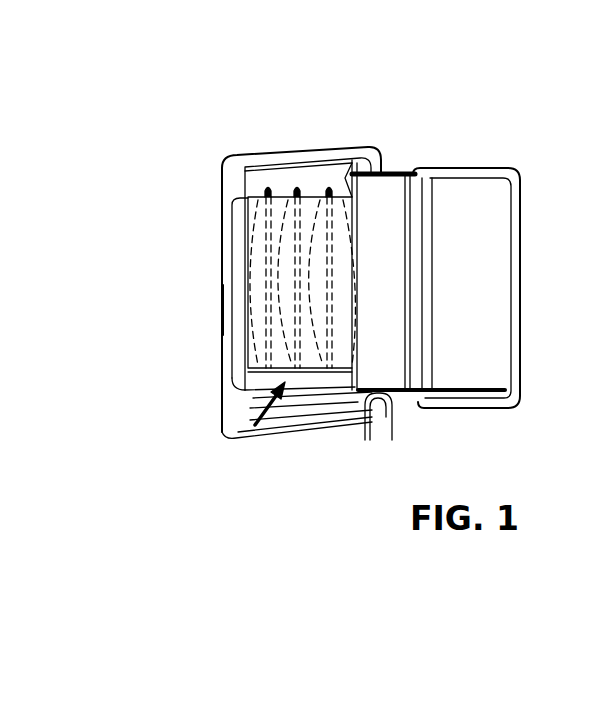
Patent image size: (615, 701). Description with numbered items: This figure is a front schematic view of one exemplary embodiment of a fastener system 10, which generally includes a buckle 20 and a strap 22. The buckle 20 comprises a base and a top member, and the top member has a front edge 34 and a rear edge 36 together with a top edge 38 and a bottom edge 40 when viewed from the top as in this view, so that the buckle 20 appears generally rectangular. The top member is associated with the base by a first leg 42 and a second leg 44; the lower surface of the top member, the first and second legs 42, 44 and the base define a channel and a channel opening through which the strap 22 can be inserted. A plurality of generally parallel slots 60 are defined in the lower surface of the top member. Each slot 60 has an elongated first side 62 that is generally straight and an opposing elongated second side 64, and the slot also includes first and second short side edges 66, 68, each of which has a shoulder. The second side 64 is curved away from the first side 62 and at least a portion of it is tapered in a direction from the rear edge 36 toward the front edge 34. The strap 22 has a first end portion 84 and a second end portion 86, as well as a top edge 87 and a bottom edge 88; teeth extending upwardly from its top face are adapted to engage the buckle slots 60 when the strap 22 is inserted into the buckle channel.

The fastener system 10 is at (285, 104).
The buckle 20 is at (228, 441).
The strap 22 is at (460, 210).
The front edge 34 is at (240, 195).
The rear edge 36 is at (345, 178).
The top edge 38 is at (225, 146).
The bottom edge 40 is at (252, 440).
The first leg 42 is at (270, 188).
The second leg 44 is at (325, 405).
The slots 60 is at (255, 270).
The first side 62 is at (265, 240).
The second side 64 is at (250, 343).
The first short side edge 66 is at (265, 193).
The second short side edge 68 is at (245, 388).
The first end portion 84 is at (523, 315).
The second end portion 86 is at (235, 308).
The top edge 87 is at (395, 172).
The bottom edge 88 is at (365, 440).